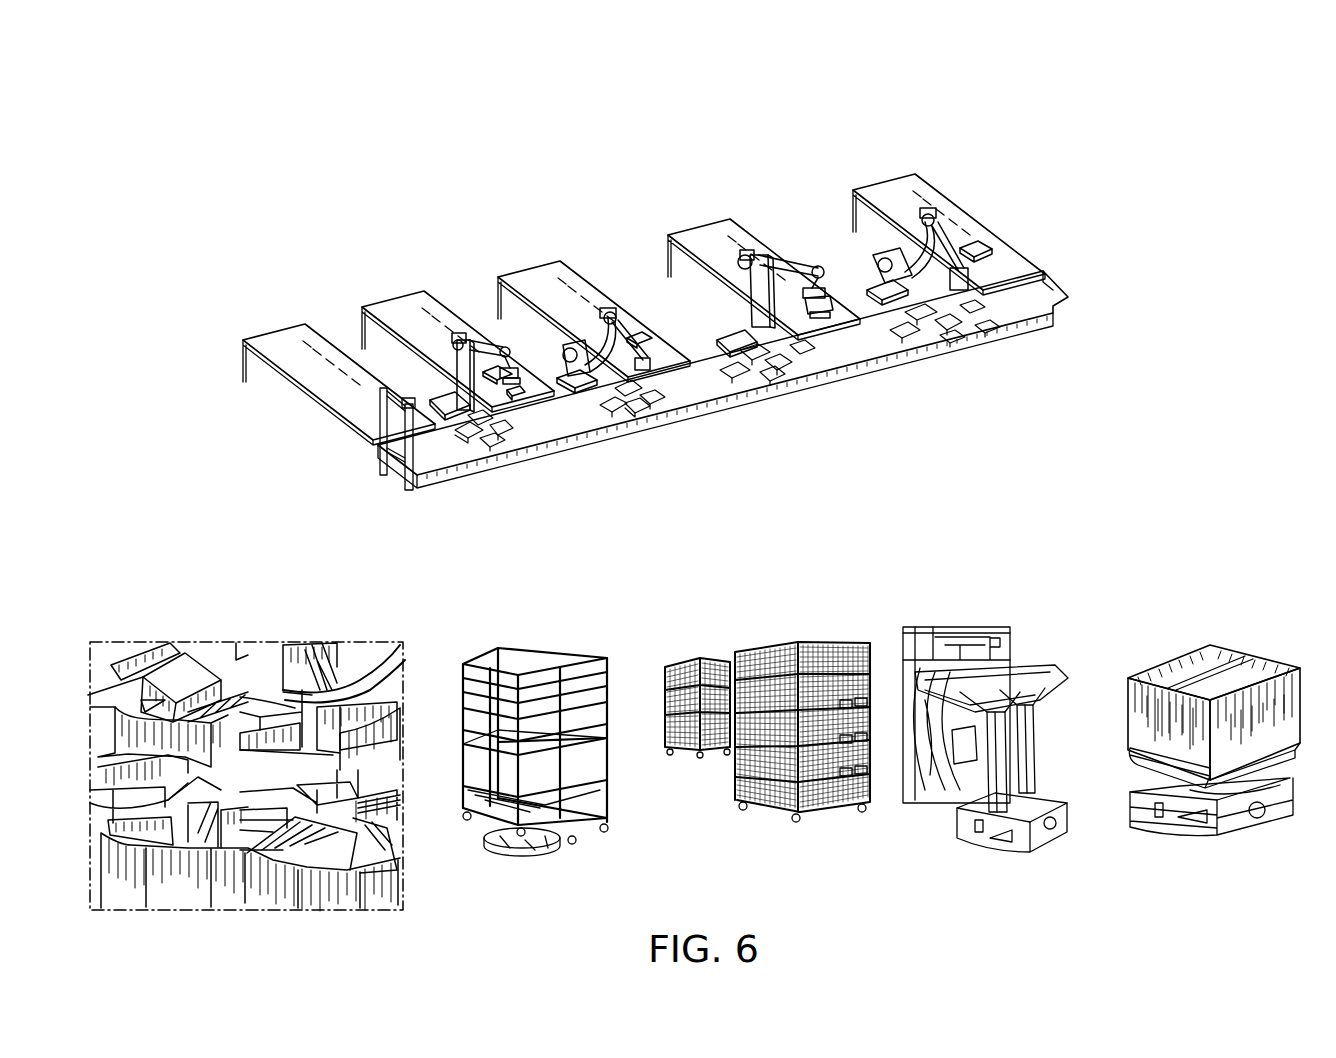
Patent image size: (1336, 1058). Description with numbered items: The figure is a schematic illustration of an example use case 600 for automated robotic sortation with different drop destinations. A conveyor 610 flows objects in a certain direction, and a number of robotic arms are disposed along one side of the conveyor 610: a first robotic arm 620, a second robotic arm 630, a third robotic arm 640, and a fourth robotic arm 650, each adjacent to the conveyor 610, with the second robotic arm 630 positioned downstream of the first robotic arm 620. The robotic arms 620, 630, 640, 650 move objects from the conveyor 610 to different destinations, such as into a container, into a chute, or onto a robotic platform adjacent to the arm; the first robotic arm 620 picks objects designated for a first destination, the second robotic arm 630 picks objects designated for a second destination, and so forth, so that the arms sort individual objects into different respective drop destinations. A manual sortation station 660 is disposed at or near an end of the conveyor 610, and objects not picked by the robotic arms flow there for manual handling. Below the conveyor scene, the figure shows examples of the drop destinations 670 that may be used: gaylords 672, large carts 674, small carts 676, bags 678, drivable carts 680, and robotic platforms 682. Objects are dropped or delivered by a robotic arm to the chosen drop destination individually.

The example use case 600 is at (1210, 86).
The conveyor 610 is at (1083, 277).
The first robotic arm 620 is at (958, 228).
The second robotic arm 630 is at (795, 242).
The third robotic arm 640 is at (633, 319).
The fourth robotic arm 650 is at (494, 334).
The manual sortation station 660 is at (269, 313).
The drop destinations 670 is at (1233, 511).
The gaylords 672 is at (265, 618).
The large carts 674 is at (551, 628).
The small carts 676 is at (795, 613).
The bags 678 is at (966, 606).
The drivable carts 680 is at (1063, 621).
The robotic platforms 682 is at (1206, 601).